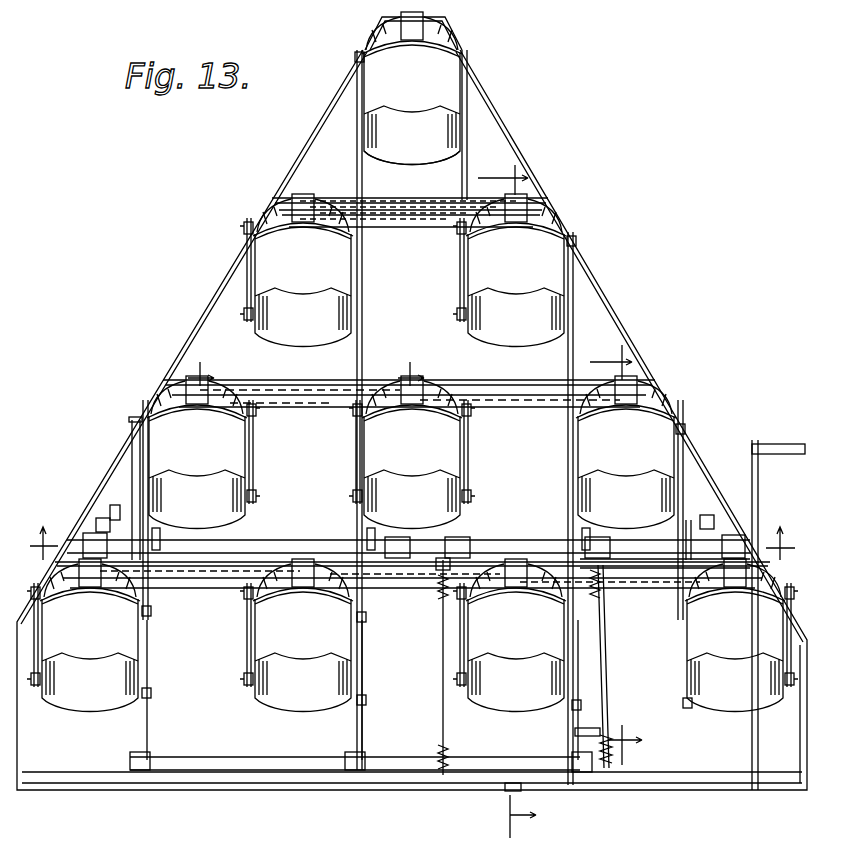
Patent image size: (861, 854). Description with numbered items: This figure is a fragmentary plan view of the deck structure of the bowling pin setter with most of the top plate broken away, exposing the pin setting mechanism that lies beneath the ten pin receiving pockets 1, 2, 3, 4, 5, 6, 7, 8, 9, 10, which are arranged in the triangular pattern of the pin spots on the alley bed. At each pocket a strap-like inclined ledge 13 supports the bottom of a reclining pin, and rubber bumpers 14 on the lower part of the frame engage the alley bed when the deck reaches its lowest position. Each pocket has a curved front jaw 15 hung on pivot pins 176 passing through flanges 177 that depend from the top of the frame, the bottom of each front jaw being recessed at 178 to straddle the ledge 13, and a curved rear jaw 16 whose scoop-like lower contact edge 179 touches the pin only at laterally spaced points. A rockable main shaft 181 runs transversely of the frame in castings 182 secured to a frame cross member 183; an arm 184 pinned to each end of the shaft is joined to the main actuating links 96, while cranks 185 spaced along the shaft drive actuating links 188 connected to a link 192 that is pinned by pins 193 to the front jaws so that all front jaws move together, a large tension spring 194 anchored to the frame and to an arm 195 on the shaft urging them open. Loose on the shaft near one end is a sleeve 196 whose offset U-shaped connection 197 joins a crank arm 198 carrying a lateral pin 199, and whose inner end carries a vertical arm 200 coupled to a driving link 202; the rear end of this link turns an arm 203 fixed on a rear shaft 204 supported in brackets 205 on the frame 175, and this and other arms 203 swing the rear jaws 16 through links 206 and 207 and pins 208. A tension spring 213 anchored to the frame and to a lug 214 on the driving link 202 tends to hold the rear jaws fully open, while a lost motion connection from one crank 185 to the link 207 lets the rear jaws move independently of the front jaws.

The pin receiving pocket 1 is at (420, 86).
The pin receiving pocket 2 is at (521, 282).
The pin receiving pocket 3 is at (308, 282).
The pin receiving pocket 4 is at (636, 464).
The pin receiving pocket 5 is at (420, 462).
The pin receiving pocket 6 is at (202, 464).
The pin receiving pocket 7 is at (746, 646).
The pin receiving pocket 8 is at (522, 644).
The pin receiving pocket 9 is at (314, 644).
The pin receiving pocket 10 is at (96, 642).
The inclined ledge 13 is at (306, 363).
The rubber bumper 14 is at (411, 543).
The front jaw 15 is at (429, 50).
The rear jaw 16 is at (421, 160).
The link 96 is at (147, 622).
The frame 175 is at (127, 455).
The pivot pin 176 is at (252, 441).
The flange 177 is at (258, 286).
The recess 178 is at (270, 200).
The contact edge 179 is at (302, 300).
The main shaft 181 is at (335, 541).
The casting 182 is at (95, 530).
The frame cross member 183 is at (297, 406).
The arm 184 is at (100, 520).
The crank 185 is at (157, 536).
The actuating link 188 is at (130, 483).
The link 192 is at (356, 103).
The pin 193 is at (355, 57).
The tension spring 194 is at (441, 635).
The arm 195 is at (434, 565).
The sleeve 196 is at (645, 562).
The U-shaped connection 197 is at (689, 522).
The crank arm 198 is at (759, 496).
The pin 199 is at (768, 441).
The arm 200 is at (597, 545).
The driving link 202 is at (601, 731).
The arm 203 is at (513, 793).
The rear shaft 204 is at (258, 760).
The bracket 205 is at (142, 782).
The link 206 is at (152, 579).
The link 207 is at (356, 362).
The pin 208 is at (140, 508).
The tension spring 213 is at (606, 672).
The lug 214 is at (600, 592).